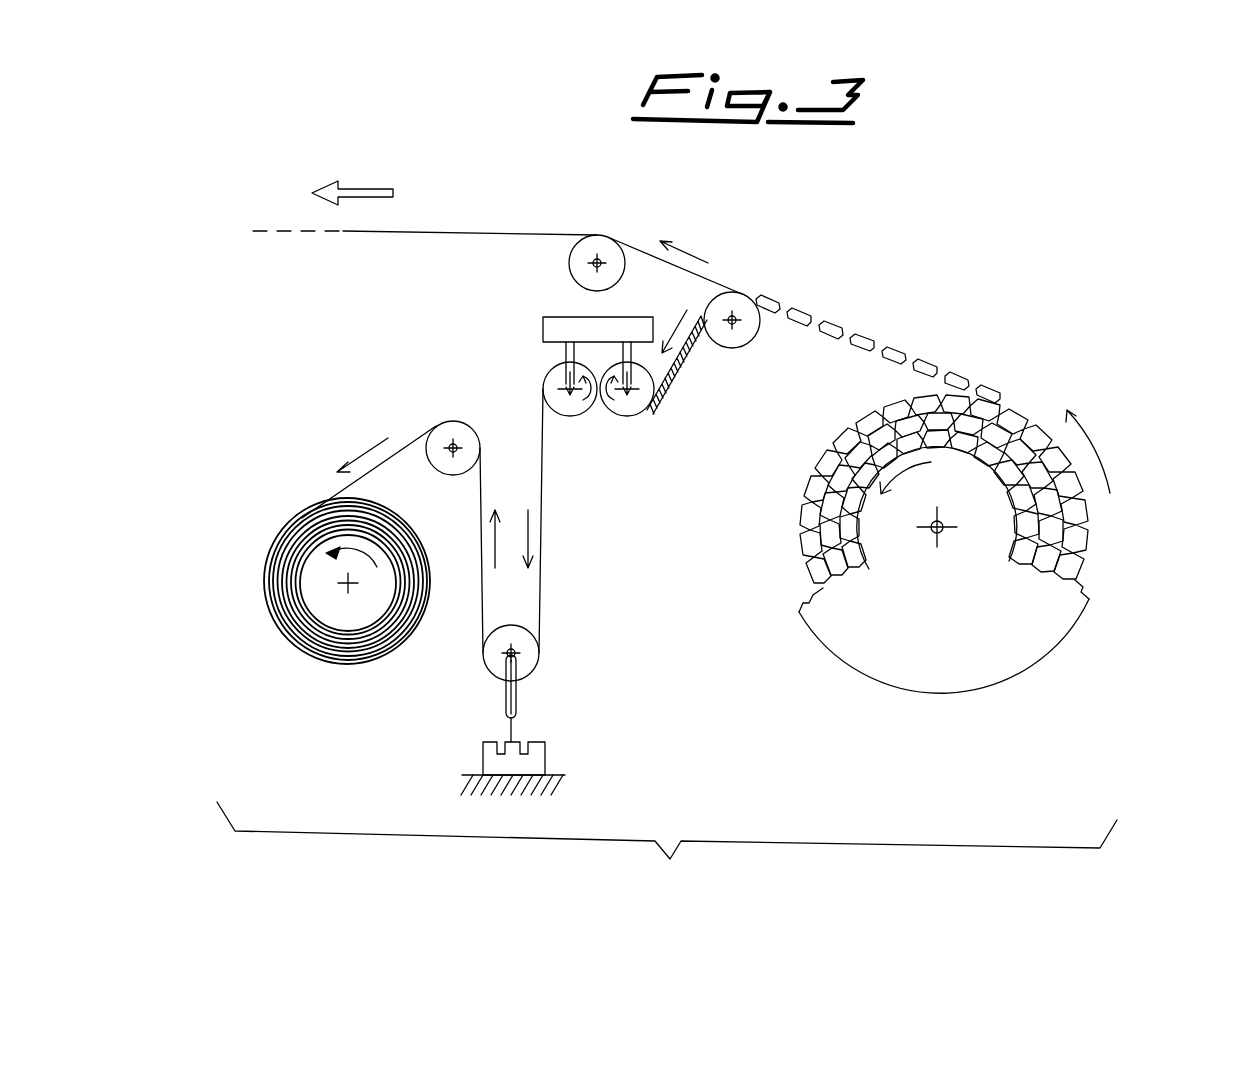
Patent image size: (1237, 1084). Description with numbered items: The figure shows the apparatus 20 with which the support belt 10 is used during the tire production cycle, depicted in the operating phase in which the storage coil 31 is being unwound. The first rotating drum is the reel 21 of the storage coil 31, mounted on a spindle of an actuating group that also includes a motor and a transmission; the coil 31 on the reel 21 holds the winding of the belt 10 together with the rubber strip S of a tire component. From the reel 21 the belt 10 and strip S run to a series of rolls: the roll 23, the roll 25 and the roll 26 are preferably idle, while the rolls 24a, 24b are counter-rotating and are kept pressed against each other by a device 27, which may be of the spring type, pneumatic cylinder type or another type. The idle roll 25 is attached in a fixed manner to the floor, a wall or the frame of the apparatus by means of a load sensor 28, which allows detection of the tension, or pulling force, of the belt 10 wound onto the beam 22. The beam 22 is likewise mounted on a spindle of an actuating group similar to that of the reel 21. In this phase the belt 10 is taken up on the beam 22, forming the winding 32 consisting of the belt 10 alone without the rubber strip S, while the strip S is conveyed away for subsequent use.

The rubber strip S is at (483, 231).
The support belt 10 is at (895, 342).
The apparatus 20 is at (667, 850).
The reel 21 is at (908, 625).
The beam 22 is at (312, 570).
The idle roll 23 is at (737, 302).
The counter-rotating roll 24a is at (640, 405).
The counter-rotating roll 24b is at (566, 403).
The idle roll 25 is at (526, 650).
The idle roll 26 is at (452, 425).
The device 27 is at (555, 322).
The load sensor 28 is at (535, 760).
The storage coil 31 is at (1108, 552).
The winding 32 is at (368, 675).